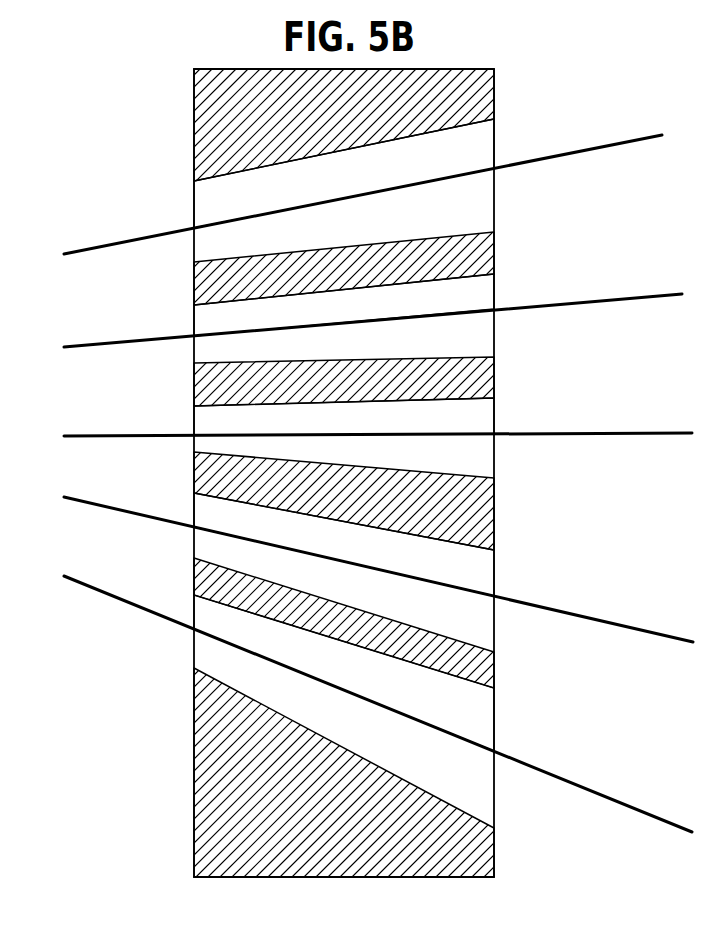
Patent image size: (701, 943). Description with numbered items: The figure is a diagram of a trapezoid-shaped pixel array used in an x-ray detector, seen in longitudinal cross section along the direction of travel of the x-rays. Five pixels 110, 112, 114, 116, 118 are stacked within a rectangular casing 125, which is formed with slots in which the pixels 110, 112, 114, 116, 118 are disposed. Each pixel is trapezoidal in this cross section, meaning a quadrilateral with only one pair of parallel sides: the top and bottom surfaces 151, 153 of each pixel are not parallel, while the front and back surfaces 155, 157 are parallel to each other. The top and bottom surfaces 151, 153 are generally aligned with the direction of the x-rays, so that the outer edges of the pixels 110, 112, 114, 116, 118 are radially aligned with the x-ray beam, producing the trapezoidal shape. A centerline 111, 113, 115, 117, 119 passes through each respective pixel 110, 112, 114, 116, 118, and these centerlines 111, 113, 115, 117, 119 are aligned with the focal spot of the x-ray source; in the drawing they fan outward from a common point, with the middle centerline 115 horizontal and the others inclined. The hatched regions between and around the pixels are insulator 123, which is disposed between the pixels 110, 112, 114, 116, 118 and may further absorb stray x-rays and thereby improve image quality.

The pixel 110 is at (465, 149).
The centerline 111 is at (633, 141).
The pixel 112 is at (470, 291).
The centerline 113 is at (638, 302).
The pixel 114 is at (470, 417).
The centerline 115 is at (645, 435).
The pixel 116 is at (475, 562).
The centerline 117 is at (647, 632).
The pixel 118 is at (460, 703).
The centerline 119 is at (612, 798).
The insulator 123 is at (275, 832).
The casing 125 is at (350, 878).
The top surface 151 is at (273, 162).
The bottom surface 153 is at (417, 237).
The front surface 155 is at (193, 248).
The back surface 157 is at (494, 187).